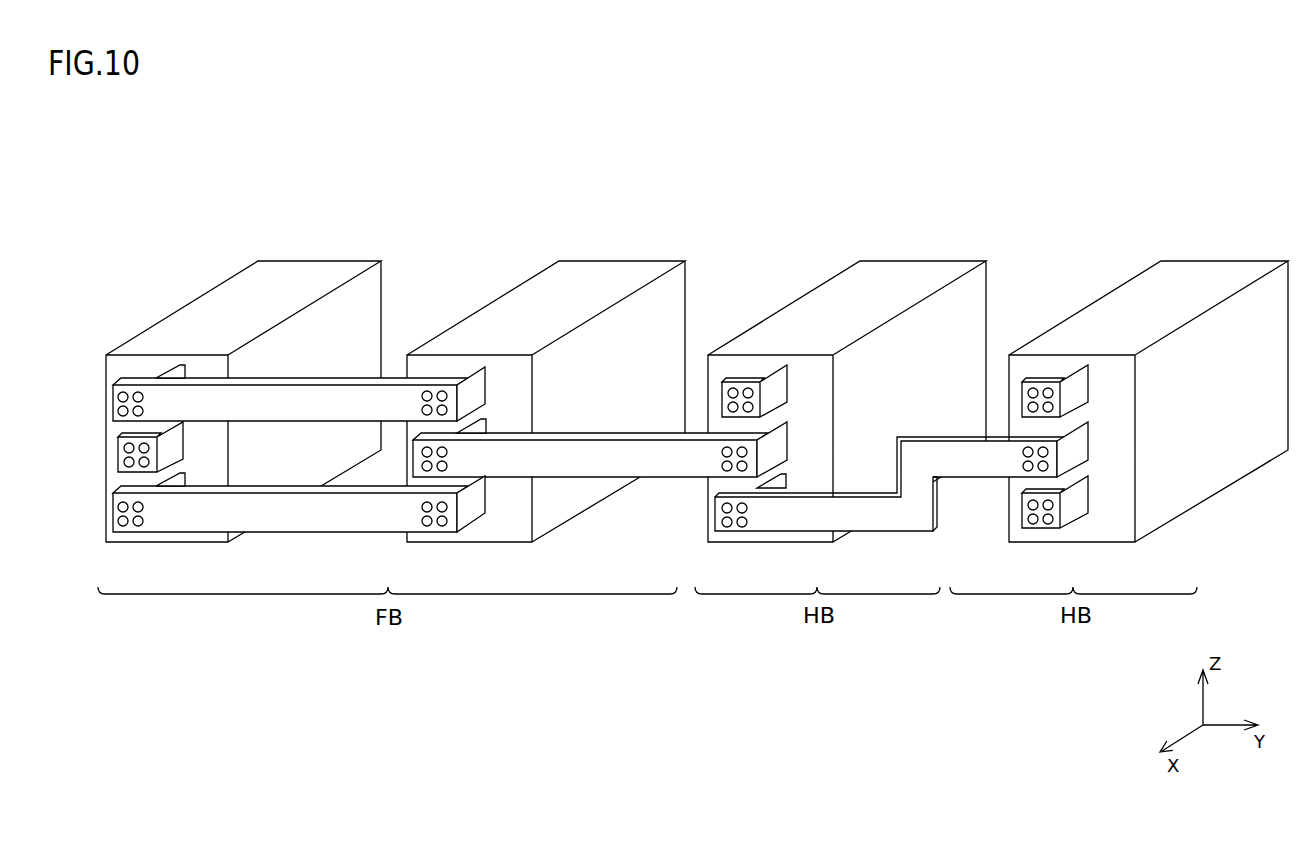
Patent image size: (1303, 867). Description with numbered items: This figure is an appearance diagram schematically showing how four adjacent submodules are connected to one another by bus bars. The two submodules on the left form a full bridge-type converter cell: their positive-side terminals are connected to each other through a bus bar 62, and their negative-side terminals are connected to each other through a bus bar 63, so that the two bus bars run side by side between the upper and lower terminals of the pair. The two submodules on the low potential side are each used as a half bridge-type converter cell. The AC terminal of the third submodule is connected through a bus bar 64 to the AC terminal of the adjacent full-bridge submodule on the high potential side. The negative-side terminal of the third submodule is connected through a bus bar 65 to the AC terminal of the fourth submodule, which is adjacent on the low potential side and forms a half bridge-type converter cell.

The bus bar 62 is at (392, 413).
The bus bar 63 is at (337, 519).
The bus bar 64 is at (668, 462).
The bus bar 65 is at (978, 465).